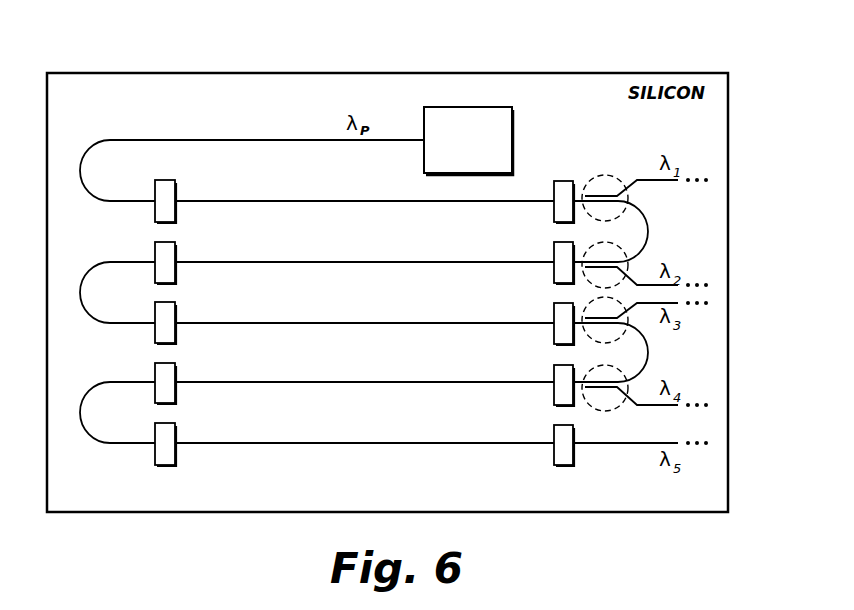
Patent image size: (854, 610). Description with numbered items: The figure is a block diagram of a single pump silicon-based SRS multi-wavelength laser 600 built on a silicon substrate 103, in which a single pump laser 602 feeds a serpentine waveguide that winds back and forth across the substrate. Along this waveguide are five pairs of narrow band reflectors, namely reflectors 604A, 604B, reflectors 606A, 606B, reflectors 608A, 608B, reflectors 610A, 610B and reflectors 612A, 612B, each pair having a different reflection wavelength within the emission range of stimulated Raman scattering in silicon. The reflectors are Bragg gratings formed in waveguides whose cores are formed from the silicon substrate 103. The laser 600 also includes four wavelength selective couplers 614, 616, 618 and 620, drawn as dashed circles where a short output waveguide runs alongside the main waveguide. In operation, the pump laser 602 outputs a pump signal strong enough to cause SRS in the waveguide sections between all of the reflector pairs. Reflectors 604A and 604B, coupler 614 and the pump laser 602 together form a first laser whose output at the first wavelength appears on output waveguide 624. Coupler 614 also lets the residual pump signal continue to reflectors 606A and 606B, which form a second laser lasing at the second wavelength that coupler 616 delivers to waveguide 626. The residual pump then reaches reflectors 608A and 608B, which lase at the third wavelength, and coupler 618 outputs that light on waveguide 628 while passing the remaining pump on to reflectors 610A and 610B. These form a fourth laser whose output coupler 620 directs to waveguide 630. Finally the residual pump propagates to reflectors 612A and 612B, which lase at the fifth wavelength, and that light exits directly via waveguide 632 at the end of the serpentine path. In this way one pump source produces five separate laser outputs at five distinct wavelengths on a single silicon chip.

The single pump silicon-based SRS multi-wavelength laser 600 is at (554, 65).
The pump laser 602 is at (512, 127).
The silicon substrate 103 is at (405, 498).
The narrow band reflector 604A is at (176, 189).
The narrow band reflector 604B is at (561, 181).
The narrow band reflector 606A is at (176, 250).
The narrow band reflector 606B is at (556, 245).
The narrow band reflector 608A is at (176, 310).
The narrow band reflector 608B is at (556, 305).
The narrow band reflector 610A is at (176, 370).
The narrow band reflector 610B is at (556, 366).
The narrow band reflector 612A is at (176, 430).
The narrow band reflector 612B is at (556, 426).
The wavelength selective coupler 614 is at (630, 194).
The wavelength selective coupler 616 is at (652, 242).
The wavelength selective coupler 618 is at (650, 352).
The wavelength selective coupler 620 is at (612, 410).
The output waveguide 624 is at (652, 179).
The waveguide 626 is at (658, 285).
The waveguide 628 is at (650, 305).
The waveguide 630 is at (661, 405).
The waveguide 632 is at (610, 443).